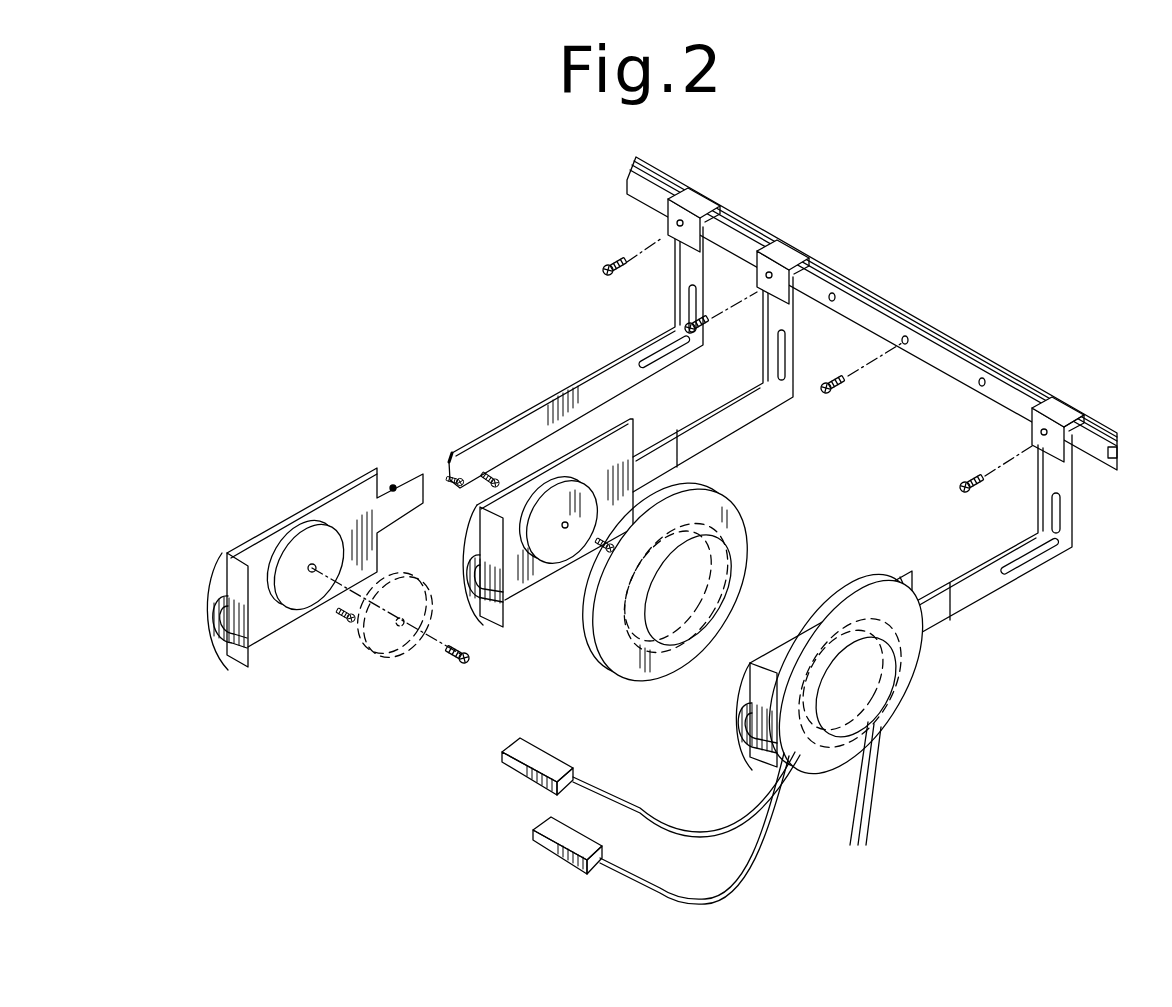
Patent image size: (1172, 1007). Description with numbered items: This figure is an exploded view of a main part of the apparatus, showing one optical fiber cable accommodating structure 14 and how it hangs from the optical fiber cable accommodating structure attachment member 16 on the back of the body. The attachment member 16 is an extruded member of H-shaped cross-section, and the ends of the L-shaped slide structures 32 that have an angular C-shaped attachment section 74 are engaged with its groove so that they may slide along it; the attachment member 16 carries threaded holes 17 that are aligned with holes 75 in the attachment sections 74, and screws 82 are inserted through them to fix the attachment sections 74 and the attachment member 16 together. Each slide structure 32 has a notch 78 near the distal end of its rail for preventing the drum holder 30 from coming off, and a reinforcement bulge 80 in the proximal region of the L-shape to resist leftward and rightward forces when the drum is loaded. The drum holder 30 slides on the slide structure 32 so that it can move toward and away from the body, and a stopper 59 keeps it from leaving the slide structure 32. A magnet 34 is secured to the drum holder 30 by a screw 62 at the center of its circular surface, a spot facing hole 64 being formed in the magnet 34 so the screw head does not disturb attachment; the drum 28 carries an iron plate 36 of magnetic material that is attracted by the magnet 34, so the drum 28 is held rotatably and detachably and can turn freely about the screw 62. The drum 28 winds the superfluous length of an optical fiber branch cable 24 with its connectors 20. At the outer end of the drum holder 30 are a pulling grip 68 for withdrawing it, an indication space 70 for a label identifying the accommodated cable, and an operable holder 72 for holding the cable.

The optical fiber cable accommodating structure 14 is at (1064, 678).
The optical fiber cable accommodating structure attachment member 16 is at (872, 292).
The threaded hole 17 is at (984, 380).
The cable connector 20 is at (545, 843).
The optical fiber branch cable 24 is at (873, 787).
The drum 28 is at (893, 707).
The drum holder 30 is at (252, 533).
The slide structure 32 is at (590, 370).
The magnet 34 is at (566, 560).
The iron plate 36 is at (695, 588).
The stopper 59 is at (390, 487).
The screw 62 is at (455, 663).
The spot facing hole 64 is at (313, 576).
The pulling grip 68 is at (213, 645).
The indication space 70 is at (220, 553).
The operable holder 72 is at (240, 660).
The angular C-shaped attachment section 74 is at (1083, 413).
The hole 75 is at (1060, 408).
The notch 78 is at (470, 447).
The reinforcement bulge 80 is at (1057, 530).
The screw 82 is at (843, 386).